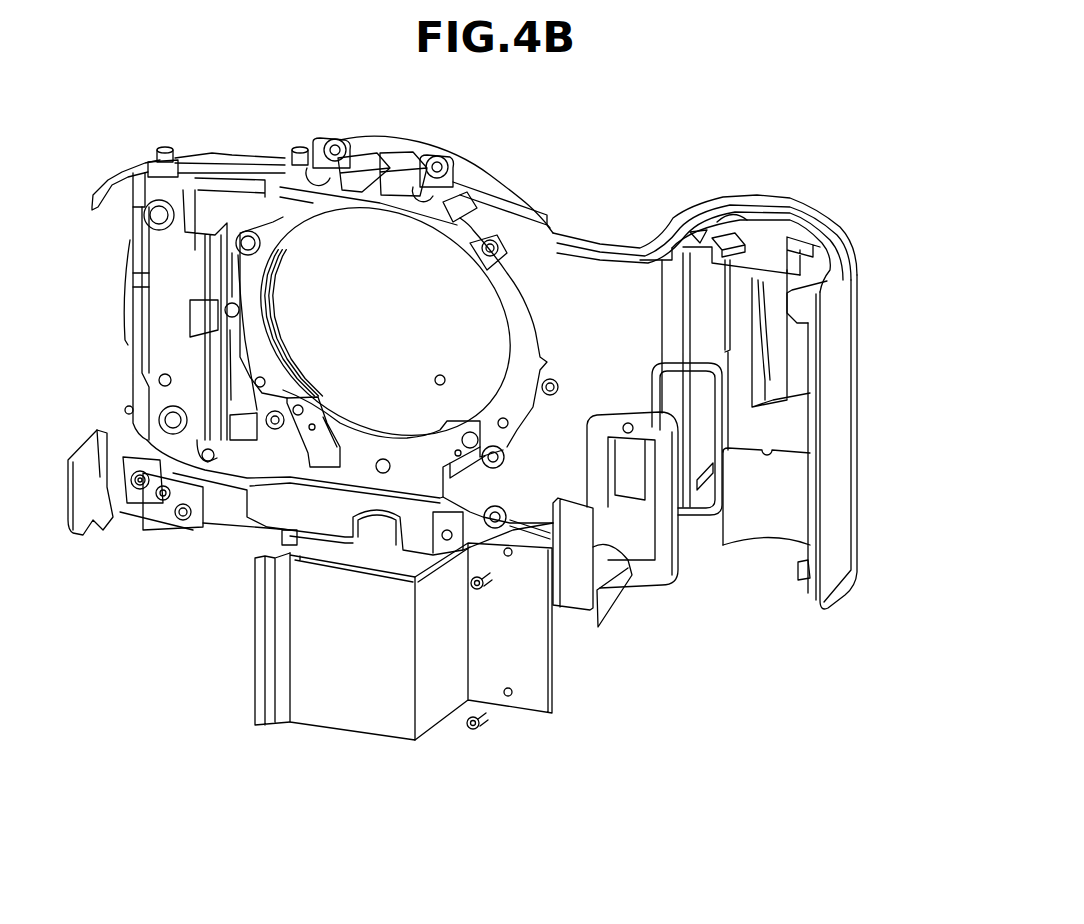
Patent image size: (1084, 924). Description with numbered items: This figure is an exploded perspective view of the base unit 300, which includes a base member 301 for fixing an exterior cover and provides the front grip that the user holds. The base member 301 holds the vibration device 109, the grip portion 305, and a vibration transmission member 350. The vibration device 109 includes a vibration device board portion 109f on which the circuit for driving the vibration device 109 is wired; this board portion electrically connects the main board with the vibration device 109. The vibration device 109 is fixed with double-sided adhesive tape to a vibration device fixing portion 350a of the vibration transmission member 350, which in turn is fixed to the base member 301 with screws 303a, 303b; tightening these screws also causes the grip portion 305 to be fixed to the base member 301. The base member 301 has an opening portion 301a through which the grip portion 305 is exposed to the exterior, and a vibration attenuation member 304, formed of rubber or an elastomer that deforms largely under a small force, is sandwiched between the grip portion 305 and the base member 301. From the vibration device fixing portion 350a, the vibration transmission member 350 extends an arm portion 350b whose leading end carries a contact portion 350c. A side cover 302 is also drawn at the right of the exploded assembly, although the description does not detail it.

The base unit 300 is at (493, 158).
The base member 301 is at (662, 250).
The opening portion 301a is at (777, 332).
The side cover 302 is at (837, 306).
The vibration attenuation member 304 is at (697, 548).
The grip portion 305 is at (663, 547).
The vibration device 109 is at (572, 590).
The vibration device board portion 109f is at (613, 603).
The vibration transmission member 350 is at (418, 684).
The vibration device fixing portion 350a is at (530, 680).
The arm portion 350b is at (440, 693).
The contact portion 350c is at (263, 727).
The screw 303a is at (477, 740).
The screw 303b is at (478, 592).